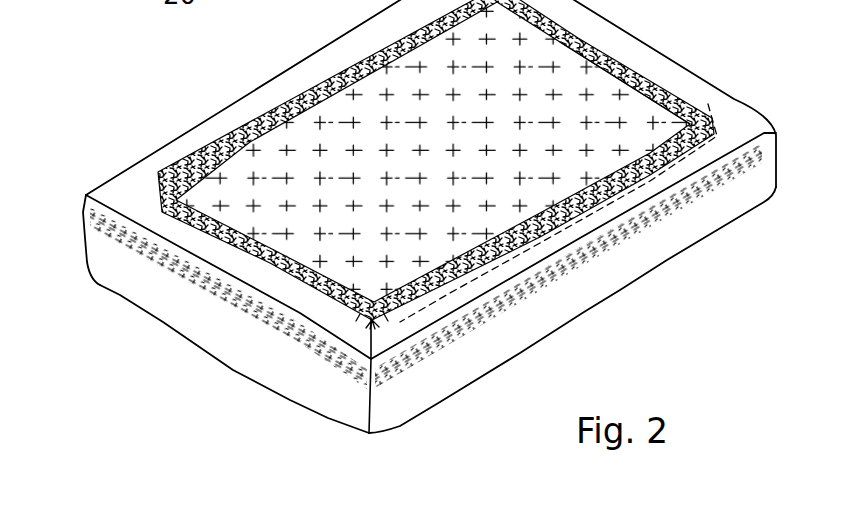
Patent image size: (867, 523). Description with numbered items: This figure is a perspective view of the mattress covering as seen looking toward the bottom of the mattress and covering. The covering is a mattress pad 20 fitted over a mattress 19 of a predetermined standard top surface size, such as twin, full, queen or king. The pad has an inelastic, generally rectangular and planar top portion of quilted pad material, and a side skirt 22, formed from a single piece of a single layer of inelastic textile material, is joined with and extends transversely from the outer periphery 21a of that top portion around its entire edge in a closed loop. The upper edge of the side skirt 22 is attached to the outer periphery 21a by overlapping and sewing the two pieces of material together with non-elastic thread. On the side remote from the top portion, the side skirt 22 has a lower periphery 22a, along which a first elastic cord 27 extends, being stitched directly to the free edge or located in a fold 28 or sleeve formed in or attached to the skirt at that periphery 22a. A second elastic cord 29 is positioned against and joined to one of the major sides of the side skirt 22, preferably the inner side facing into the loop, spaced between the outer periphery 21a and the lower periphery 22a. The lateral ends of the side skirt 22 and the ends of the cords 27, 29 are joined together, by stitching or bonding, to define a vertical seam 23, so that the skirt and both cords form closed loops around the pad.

The mattress 19 is at (473, 160).
The mattress pad 20 is at (152, 150).
The outer periphery of the top portion 21a is at (238, 372).
The side skirt 22 is at (569, 302).
The lower periphery of the side skirt 22a is at (614, 78).
The vertical seam 23 is at (363, 347).
The first elastic cord 27 is at (649, 66).
The fold 28 is at (318, 86).
The second elastic cord 29 is at (83, 247).